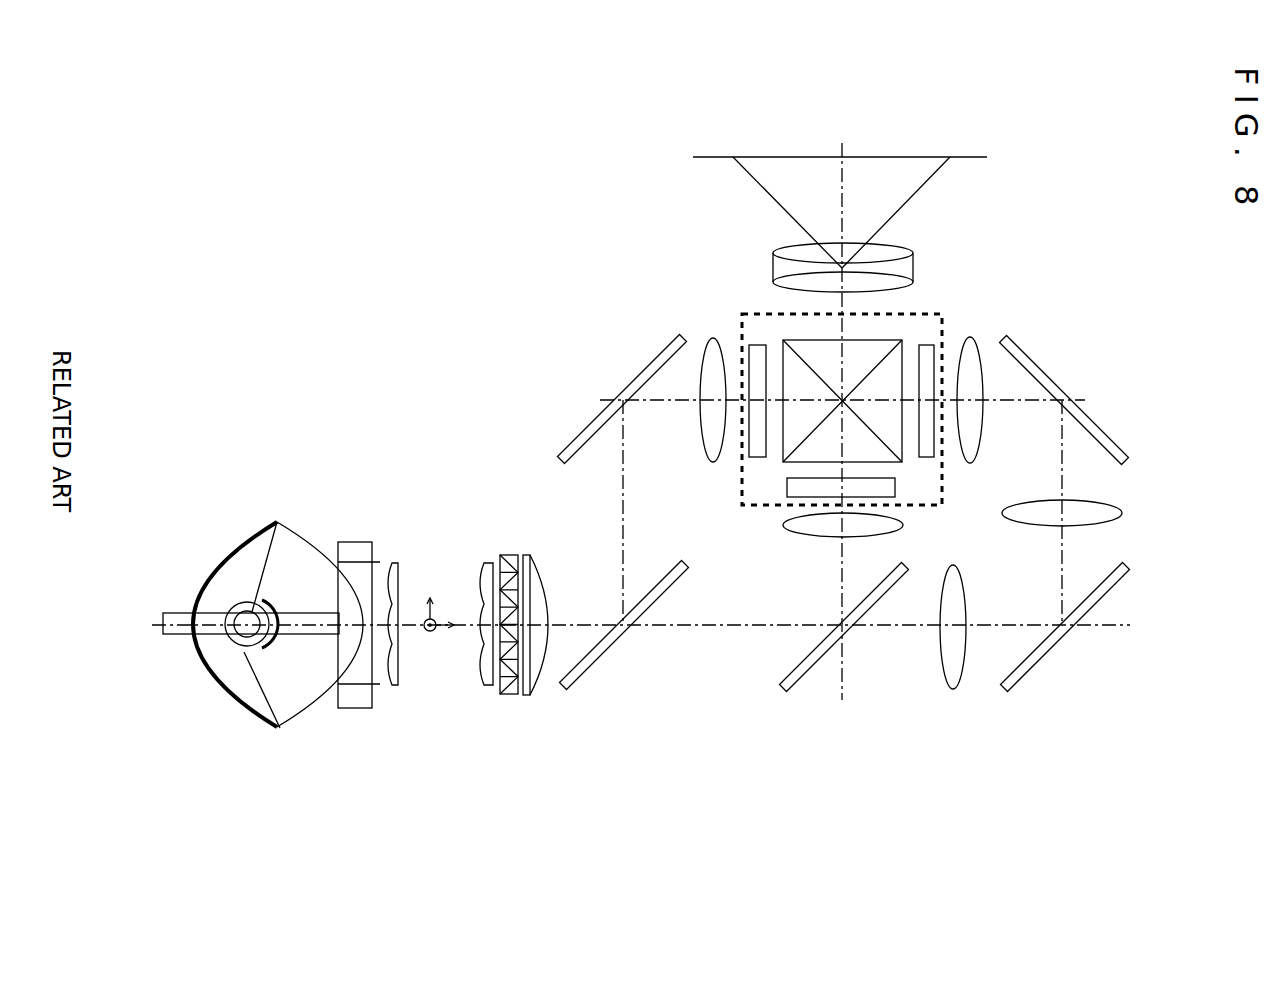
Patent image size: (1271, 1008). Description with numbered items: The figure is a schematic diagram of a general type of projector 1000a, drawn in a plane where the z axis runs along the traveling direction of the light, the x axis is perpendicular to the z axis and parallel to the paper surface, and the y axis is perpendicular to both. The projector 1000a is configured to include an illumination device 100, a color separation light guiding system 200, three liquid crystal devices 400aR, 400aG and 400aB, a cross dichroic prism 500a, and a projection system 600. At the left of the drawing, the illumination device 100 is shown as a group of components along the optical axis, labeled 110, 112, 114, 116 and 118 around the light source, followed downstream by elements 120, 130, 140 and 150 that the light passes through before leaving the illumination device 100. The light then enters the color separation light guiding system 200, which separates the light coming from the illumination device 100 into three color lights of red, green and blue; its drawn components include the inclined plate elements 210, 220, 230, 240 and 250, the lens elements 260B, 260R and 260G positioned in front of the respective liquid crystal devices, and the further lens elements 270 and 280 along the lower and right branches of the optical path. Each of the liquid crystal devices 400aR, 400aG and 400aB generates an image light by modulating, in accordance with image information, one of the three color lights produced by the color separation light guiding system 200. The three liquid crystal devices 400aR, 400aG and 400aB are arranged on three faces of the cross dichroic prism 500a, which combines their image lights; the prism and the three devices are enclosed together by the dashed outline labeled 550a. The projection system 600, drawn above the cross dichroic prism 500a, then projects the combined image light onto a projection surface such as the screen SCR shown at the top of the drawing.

The projector 1000a is at (396, 444).
The illumination device 100 is at (618, 806).
The light source unit 110 is at (405, 770).
The light emitting tube 112 is at (247, 646).
The reflector 114 is at (212, 690).
The auxiliary reflector 116 is at (264, 650).
The light source holder 118 is at (355, 708).
The first lens array 120 is at (393, 686).
The second lens array 130 is at (488, 686).
The polarization conversion element 140 is at (509, 695).
The superimposing lens 150 is at (540, 696).
The color separation light guiding system 200 is at (836, 807).
The reflection mirror 210 is at (607, 658).
The dichroic mirror 220 is at (820, 672).
The reflection mirror 230 is at (584, 440).
The dichroic mirror 240 is at (1095, 620).
The reflection mirror 250 is at (1048, 352).
The field lens 260B is at (713, 338).
The field lens 260R is at (975, 337).
The field lens 260G is at (903, 525).
The relay lens 270 is at (953, 690).
The relay lens 280 is at (1122, 513).
The liquid crystal device 400aB is at (756, 345).
The liquid crystal device 400aR is at (932, 345).
The liquid crystal device 400aG is at (787, 488).
The cross dichroic prism 500a is at (780, 315).
The optical device 550a is at (925, 312).
The projection system 600 is at (913, 270).
The screen SCR is at (955, 158).